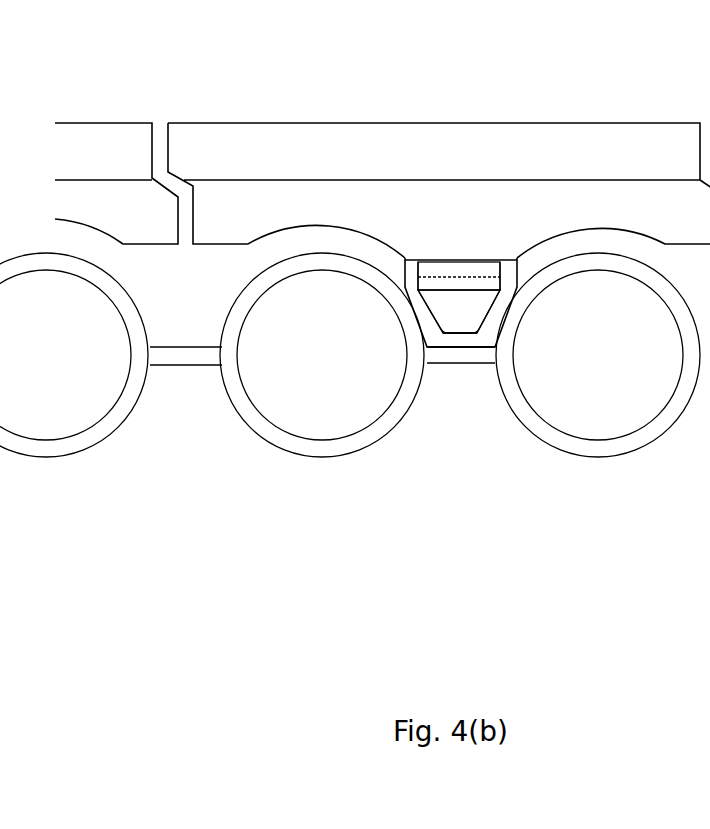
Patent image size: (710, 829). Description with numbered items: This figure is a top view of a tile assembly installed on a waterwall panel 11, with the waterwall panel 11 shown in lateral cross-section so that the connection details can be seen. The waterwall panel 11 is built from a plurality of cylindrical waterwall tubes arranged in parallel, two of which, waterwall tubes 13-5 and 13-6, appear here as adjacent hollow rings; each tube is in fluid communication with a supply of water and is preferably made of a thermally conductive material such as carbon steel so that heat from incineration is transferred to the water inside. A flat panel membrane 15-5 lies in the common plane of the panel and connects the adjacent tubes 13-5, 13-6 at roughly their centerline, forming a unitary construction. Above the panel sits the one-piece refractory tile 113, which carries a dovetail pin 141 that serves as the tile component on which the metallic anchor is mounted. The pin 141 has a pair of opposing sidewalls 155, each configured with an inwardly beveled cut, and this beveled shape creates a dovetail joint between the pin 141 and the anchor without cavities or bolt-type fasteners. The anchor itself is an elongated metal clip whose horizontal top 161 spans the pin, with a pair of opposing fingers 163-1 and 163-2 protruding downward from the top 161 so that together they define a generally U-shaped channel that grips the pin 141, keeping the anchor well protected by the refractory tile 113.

The refractory tile 113 is at (268, 123).
The sidewall 155 is at (503, 268).
The finger 163-1 is at (420, 307).
The finger 163-2 is at (497, 310).
The dovetail pin 141 is at (453, 291).
The top 161 is at (467, 338).
The panel membrane 15-5 is at (442, 365).
The waterwall tube 13-5 is at (350, 457).
The waterwall tube 13-6 is at (630, 456).
The waterwall panel 11 is at (158, 452).